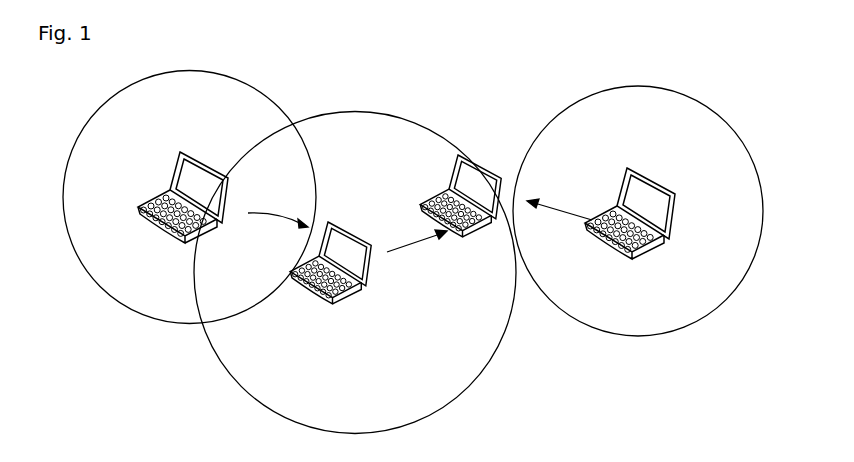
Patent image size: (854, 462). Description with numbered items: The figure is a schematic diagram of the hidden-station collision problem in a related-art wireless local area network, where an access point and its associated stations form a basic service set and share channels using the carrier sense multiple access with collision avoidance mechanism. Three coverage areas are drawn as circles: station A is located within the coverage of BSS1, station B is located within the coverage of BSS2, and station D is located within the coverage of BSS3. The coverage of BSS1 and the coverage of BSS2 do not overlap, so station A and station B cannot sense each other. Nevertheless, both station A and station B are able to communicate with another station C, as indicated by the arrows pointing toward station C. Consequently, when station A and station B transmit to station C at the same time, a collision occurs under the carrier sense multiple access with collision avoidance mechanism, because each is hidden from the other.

The station A is at (330, 277).
The station B is at (630, 225).
The station C is at (460, 206).
The station D is at (183, 208).
The BSS 1 BSS1 is at (355, 273).
The BSS 2 BSS2 is at (638, 211).
The BSS 3 BSS3 is at (189, 197).